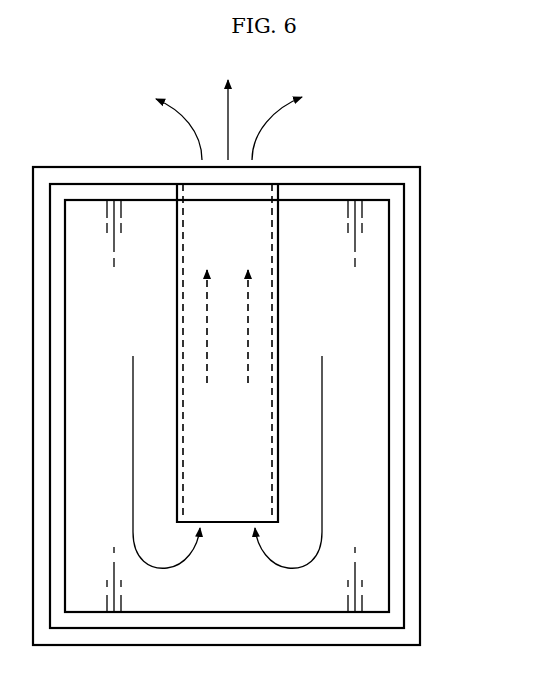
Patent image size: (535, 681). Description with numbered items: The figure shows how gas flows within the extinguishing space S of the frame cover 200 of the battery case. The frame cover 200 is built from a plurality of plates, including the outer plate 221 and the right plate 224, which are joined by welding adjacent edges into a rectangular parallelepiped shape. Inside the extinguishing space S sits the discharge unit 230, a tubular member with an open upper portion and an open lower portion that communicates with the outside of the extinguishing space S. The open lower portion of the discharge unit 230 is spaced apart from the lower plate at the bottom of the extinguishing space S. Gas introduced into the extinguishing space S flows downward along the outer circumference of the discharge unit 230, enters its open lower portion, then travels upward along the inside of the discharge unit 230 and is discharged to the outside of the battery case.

The frame cover 200 is at (100, 140).
The outer plate 221 is at (415, 181).
The right plate 224 is at (395, 233).
The discharge unit 230 is at (258, 337).
The extinguishing space S is at (337, 428).